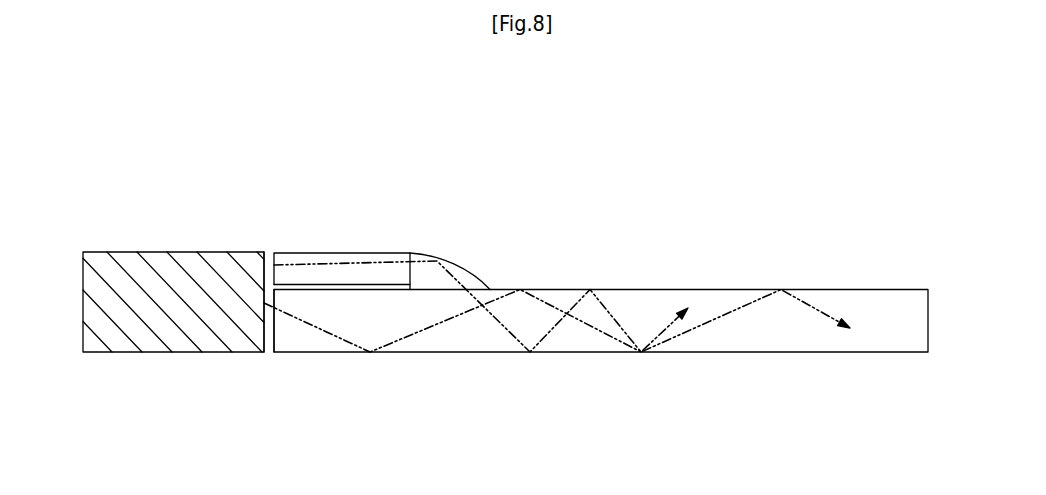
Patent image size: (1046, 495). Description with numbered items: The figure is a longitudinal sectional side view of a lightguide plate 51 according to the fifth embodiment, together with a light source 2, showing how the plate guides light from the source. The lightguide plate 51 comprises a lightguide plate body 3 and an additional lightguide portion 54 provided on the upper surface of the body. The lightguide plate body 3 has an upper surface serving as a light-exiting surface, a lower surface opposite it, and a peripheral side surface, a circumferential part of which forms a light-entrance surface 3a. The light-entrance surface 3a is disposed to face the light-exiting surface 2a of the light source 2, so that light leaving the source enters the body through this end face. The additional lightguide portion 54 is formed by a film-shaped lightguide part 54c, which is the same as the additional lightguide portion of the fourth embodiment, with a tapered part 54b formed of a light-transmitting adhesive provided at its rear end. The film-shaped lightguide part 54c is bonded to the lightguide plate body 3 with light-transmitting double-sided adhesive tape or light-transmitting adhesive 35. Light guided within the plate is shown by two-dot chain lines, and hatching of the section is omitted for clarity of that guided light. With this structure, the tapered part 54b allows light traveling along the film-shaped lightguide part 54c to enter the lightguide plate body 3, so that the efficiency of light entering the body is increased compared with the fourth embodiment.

The light source 2 is at (177, 252).
The light-exiting surface of light source 2a is at (264, 333).
The lightguide plate body 3 is at (685, 352).
The light-entrance surface 3a is at (274, 337).
The light-transmitting adhesive 35 is at (365, 290).
The lightguide plate 51 is at (791, 200).
The additional lightguide portion 54 is at (406, 219).
The tapered part 54b is at (462, 265).
The film-shaped lightguide part 54c is at (332, 252).